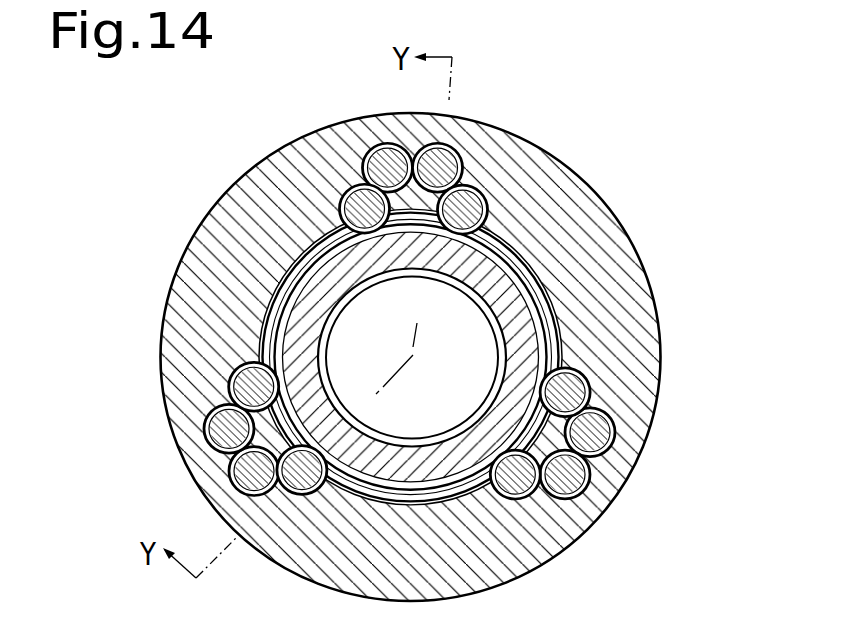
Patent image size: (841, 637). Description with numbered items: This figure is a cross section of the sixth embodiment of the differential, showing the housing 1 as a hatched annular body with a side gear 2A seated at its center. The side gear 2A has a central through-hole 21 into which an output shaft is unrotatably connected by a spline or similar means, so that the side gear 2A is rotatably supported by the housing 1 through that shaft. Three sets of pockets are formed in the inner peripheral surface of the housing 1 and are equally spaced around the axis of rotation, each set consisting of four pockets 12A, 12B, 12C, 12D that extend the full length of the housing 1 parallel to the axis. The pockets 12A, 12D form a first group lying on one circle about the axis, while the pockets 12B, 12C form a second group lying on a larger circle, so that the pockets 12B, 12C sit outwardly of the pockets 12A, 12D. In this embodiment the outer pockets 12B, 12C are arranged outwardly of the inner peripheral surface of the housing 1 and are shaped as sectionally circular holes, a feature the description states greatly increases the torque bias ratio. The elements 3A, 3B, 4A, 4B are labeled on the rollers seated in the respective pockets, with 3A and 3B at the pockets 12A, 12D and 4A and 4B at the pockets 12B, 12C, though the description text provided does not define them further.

The housing 1 is at (588, 165).
The side gear 2A is at (512, 302).
The through-hole 21 is at (432, 282).
The roller ring 3A is at (486, 215).
The roller ring 3B is at (347, 195).
The roller ring 4A is at (460, 155).
The roller ring 4B is at (386, 145).
The pocket 12A is at (478, 200).
The pocket 12B is at (436, 152).
The pocket 12C is at (380, 158).
The pocket 12D is at (350, 205).